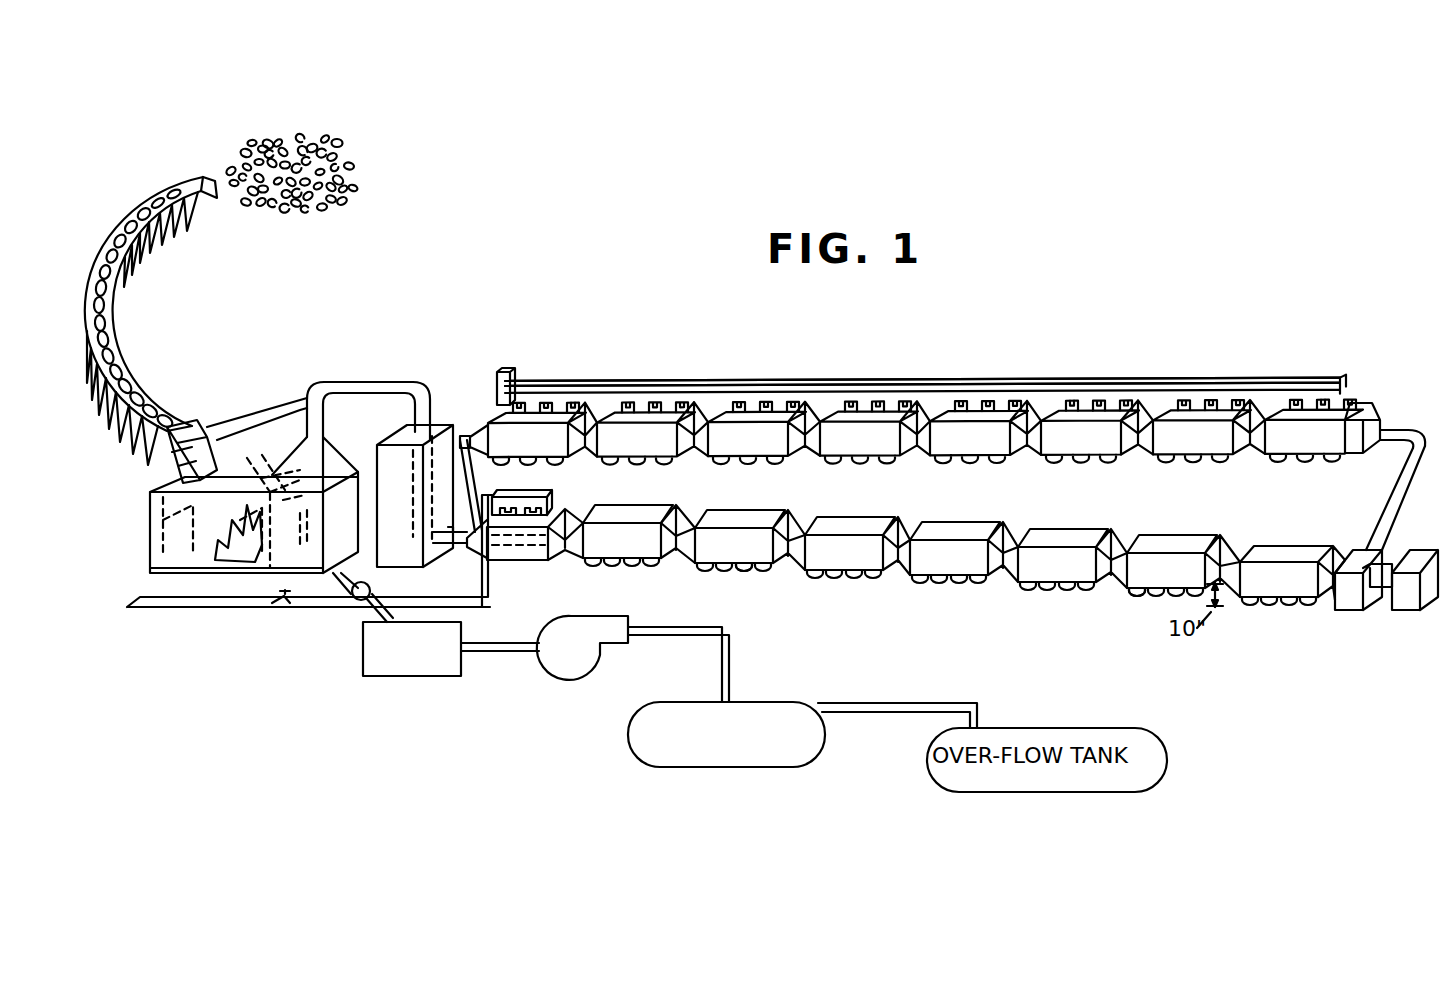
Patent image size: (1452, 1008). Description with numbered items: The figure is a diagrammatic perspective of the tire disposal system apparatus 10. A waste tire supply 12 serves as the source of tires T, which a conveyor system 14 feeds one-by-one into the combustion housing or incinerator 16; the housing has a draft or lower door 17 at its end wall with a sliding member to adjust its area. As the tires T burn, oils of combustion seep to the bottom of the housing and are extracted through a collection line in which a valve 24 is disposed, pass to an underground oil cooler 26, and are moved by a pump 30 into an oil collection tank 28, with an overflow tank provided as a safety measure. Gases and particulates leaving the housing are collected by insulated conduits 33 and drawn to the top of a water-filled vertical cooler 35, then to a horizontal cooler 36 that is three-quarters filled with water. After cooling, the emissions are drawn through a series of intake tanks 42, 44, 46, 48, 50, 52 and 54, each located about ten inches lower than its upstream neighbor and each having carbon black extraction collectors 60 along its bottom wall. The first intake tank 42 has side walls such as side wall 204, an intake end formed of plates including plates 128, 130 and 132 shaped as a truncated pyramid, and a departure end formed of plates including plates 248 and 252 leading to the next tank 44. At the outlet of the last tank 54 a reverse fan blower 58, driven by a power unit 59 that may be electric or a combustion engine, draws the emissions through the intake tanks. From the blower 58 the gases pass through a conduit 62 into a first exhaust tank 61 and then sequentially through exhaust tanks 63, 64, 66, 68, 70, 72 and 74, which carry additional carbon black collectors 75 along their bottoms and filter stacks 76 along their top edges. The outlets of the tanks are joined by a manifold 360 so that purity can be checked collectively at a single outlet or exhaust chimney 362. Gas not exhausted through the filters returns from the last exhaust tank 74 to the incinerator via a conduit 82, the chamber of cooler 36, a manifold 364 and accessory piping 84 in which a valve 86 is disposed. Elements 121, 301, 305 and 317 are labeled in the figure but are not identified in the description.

The tire disposal system apparatus 10 is at (697, 352).
The tires T is at (263, 146).
The waste tire supply 12 is at (374, 161).
The conveyor system 14 is at (137, 212).
The combustion housing 16 is at (185, 560).
The draft door 17 is at (163, 515).
The hopper 121 is at (263, 466).
The valve 24 is at (353, 604).
The underground oil cooler 26 is at (363, 661).
The oil collection tank 28 is at (718, 744).
The pump 30 is at (561, 671).
The insulated conduits 33 is at (405, 382).
The vertical cooler 35 is at (385, 470).
The horizontal cooler 36 is at (512, 565).
The first intake tank 42 is at (642, 513).
The intake tank 44 is at (771, 522).
The intake tank 46 is at (871, 525).
The intake tank 48 is at (980, 530).
The intake tank 50 is at (1088, 538).
The intake tank 52 is at (1200, 545).
The last intake tank 54 is at (1292, 551).
The reverse fan blower 58 is at (1355, 556).
The power unit 59 is at (1401, 612).
The carbon black extraction collectors 60 is at (622, 566).
The first exhaust tank 61 is at (1352, 404).
The conduit 62 is at (1417, 430).
The exhaust tank 63 is at (1214, 452).
The exhaust tank 64 is at (1090, 452).
The exhaust tank 66 is at (986, 450).
The exhaust tank 68 is at (866, 448).
The exhaust tank 70 is at (780, 452).
The exhaust tank 72 is at (640, 445).
The last exhaust tank 74 is at (503, 450).
The additional carbon black collectors 75 is at (1160, 462).
The filter stacks 76 is at (523, 401).
The conduit 82 is at (462, 436).
The accessory piping 84 is at (475, 604).
The valve 86 is at (272, 605).
The plate 128 is at (554, 550).
The plate 130 is at (563, 550).
The plate 132 is at (575, 556).
The side wall 204 is at (606, 549).
The plate 248 is at (705, 519).
The plate 252 is at (678, 560).
The return line 301 is at (1410, 484).
The elbow 305 is at (1366, 408).
The end module supports 317 is at (1306, 460).
The manifold 360 is at (590, 384).
The single outlet 362 is at (490, 363).
The manifold 364 is at (546, 499).